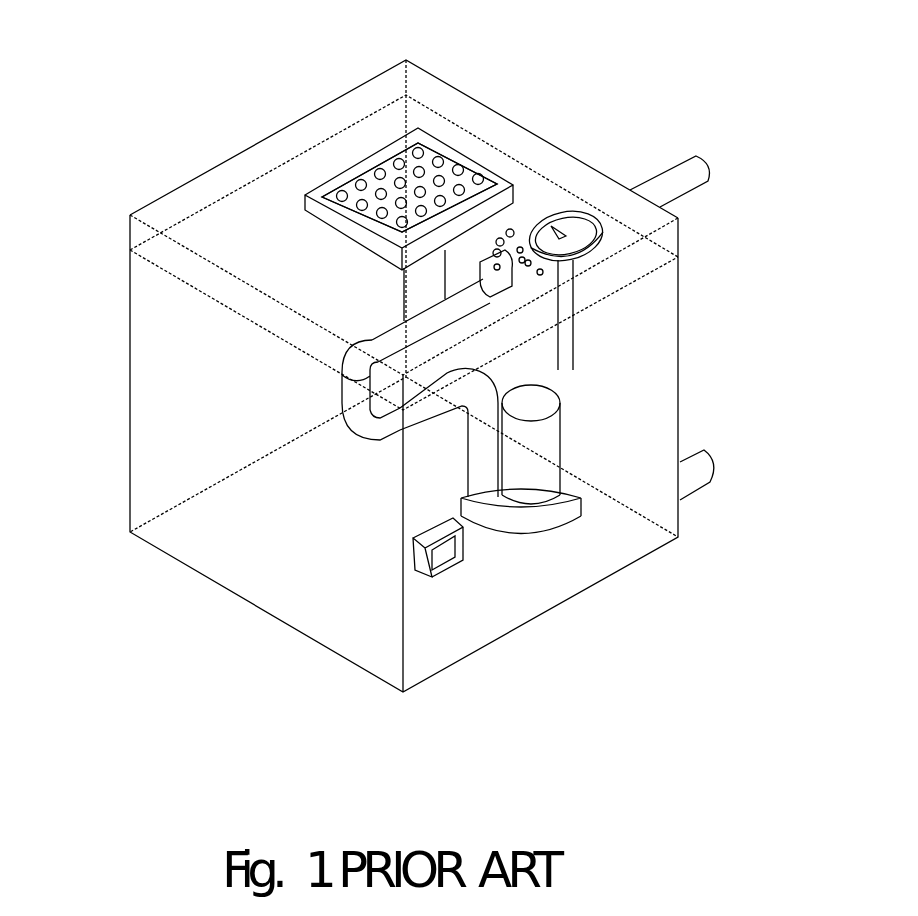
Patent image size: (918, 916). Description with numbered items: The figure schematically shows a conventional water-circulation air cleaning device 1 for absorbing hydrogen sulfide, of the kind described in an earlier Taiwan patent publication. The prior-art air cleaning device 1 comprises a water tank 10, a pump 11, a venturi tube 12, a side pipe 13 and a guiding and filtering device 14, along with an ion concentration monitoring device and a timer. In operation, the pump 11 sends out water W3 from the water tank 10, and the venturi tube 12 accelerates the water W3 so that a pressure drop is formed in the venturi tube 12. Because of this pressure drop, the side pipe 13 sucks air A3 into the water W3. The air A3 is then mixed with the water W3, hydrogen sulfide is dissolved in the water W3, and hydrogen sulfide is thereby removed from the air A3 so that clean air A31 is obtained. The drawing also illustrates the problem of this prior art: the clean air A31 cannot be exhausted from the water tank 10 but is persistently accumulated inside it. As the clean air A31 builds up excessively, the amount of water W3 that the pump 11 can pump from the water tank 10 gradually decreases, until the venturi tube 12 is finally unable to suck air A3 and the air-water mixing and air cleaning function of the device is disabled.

The air cleaning device 1 is at (185, 92).
The water tank 10 is at (130, 425).
The pump 11 is at (535, 440).
The venturi tube 12 is at (393, 331).
The side pipe 13 is at (395, 282).
The guiding and filtering device 14 is at (440, 183).
The air A3 is at (393, 184).
The clean air A31 is at (512, 230).
The water W3 is at (627, 290).